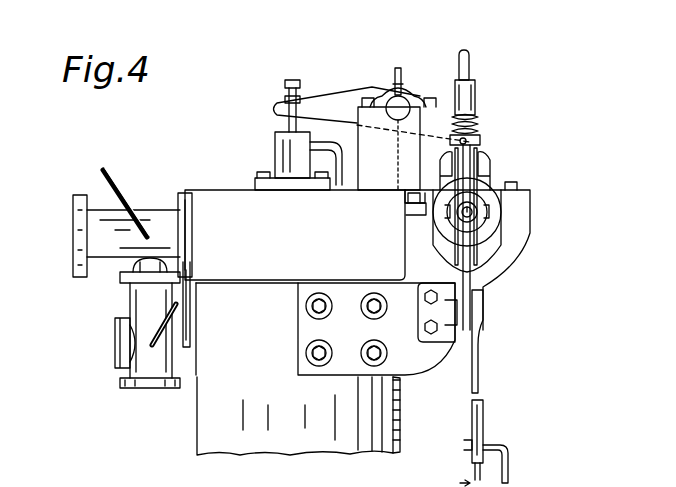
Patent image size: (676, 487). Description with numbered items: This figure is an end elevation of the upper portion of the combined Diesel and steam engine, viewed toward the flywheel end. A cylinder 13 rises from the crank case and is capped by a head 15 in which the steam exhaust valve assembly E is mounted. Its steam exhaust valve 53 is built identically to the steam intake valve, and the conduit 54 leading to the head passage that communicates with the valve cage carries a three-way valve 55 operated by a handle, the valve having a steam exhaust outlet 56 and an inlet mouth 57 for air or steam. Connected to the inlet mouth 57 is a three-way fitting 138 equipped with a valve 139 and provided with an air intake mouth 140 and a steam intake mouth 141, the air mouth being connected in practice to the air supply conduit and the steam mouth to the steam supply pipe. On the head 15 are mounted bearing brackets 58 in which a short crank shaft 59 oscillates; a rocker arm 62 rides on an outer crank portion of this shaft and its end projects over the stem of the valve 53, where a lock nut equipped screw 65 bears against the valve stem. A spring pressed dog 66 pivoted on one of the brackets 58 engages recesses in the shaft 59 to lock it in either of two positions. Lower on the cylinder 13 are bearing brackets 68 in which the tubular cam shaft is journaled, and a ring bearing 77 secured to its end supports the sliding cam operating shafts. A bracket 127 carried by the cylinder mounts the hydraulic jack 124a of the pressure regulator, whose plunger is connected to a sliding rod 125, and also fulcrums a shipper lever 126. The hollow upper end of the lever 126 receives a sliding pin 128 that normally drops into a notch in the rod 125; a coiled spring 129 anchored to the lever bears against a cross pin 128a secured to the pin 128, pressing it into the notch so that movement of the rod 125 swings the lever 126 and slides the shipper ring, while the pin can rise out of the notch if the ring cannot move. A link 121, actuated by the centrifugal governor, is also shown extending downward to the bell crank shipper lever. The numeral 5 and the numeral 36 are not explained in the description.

The head 15 is at (228, 200).
The bearing brackets 58 is at (392, 185).
The bearing brackets 68 is at (297, 331).
The cylinder 13 is at (208, 433).
The steam exhaust outlet 56 is at (72, 237).
The conduit 54 is at (108, 268).
The three-way valve 55 is at (118, 182).
The inlet mouth 57 is at (155, 275).
The three-way fitting 138 is at (125, 377).
The air intake mouth 140 is at (160, 388).
The steam intake mouth 141 is at (117, 338).
The valve 139 is at (182, 318).
The vertical plate 36 is at (188, 343).
The steam exhaust valve 53 is at (278, 130).
The lock nut equipped screw 65 is at (290, 80).
The steam exhaust valve assembly E is at (276, 155).
The rocker arm 62 is at (315, 105).
The crank shaft 59 is at (396, 115).
The spring pressed dog 66 is at (400, 88).
The hydraulic jack 124a is at (425, 170).
The sliding pin 128 is at (470, 70).
The coiled spring 129 is at (478, 110).
The cross pin 128a is at (480, 135).
The sliding rod 125 is at (472, 141).
The bracket 127 is at (485, 158).
The shipper lever 126 is at (486, 182).
The ring bearing 77 is at (490, 220).
The section line 5 is at (490, 303).
The link 121 is at (510, 450).